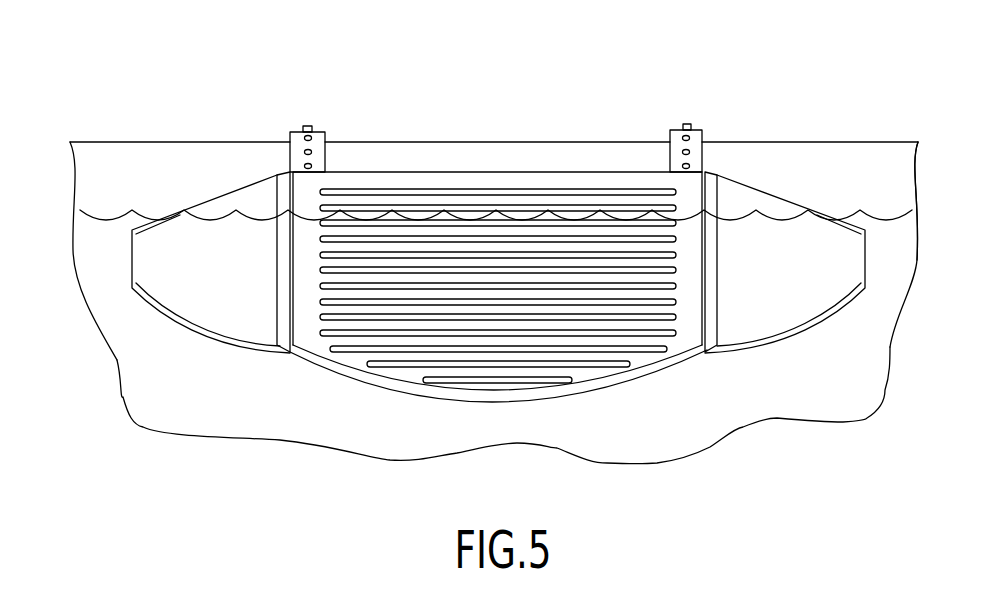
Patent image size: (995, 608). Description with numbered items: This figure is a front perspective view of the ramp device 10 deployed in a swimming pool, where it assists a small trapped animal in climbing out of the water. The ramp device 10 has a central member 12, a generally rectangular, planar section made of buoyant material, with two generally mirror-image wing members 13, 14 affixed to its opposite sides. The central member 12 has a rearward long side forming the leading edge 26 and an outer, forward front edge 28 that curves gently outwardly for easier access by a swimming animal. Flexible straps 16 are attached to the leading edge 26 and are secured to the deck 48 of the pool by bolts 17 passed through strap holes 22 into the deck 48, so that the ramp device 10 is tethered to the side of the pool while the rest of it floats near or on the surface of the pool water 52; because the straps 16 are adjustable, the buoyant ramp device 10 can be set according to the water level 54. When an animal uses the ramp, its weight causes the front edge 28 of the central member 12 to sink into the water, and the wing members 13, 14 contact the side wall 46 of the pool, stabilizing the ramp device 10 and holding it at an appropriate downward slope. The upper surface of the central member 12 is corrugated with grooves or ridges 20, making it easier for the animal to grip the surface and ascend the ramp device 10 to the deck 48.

The ramp device 10 is at (532, 120).
The central member 12 is at (342, 385).
The wing member 13 is at (197, 365).
The wing member 14 is at (835, 342).
The flexible straps 16 is at (325, 137).
The bolts 17 is at (308, 126).
The grooves or ridges 20 is at (643, 335).
The strap holes 22 is at (304, 166).
The leading edge 26 is at (483, 173).
The front edge 28 is at (600, 387).
The side wall 46 is at (850, 182).
The deck 48 is at (155, 142).
The pool water 52 is at (803, 407).
The water level 54 is at (897, 213).